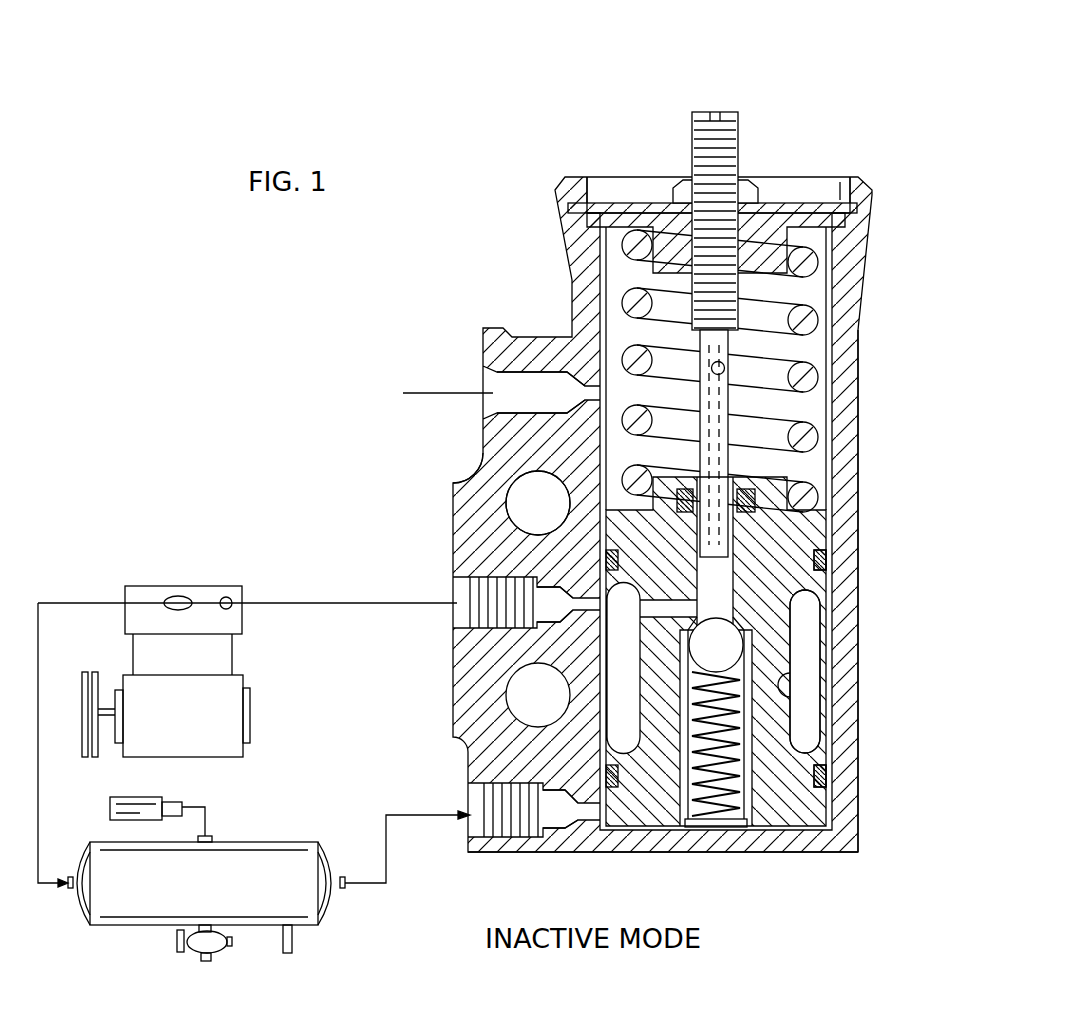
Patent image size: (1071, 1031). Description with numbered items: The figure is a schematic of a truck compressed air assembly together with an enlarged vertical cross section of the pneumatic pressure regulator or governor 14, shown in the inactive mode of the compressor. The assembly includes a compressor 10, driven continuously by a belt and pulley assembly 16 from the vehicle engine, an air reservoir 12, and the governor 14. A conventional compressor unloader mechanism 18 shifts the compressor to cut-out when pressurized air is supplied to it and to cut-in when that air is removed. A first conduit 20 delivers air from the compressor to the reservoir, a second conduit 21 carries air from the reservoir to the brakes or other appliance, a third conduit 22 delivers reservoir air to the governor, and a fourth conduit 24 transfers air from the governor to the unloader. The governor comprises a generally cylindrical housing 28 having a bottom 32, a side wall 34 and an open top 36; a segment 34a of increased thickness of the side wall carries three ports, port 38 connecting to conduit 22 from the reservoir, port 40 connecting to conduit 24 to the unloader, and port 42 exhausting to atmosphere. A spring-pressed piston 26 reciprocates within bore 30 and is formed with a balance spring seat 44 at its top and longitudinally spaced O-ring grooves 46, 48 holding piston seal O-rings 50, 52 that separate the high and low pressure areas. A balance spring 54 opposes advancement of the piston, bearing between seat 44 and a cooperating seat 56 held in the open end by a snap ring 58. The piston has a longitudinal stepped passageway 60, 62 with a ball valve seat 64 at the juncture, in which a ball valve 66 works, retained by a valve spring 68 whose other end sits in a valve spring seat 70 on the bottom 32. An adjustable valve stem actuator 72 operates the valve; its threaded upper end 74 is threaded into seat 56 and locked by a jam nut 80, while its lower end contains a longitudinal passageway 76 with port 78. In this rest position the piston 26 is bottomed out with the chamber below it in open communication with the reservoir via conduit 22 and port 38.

The compressor 10 is at (232, 683).
The air reservoir 12 is at (100, 928).
The pneumatic pressure regulator or governor 14 is at (584, 465).
The belt and pulley assembly 16 is at (84, 760).
The compressor unloader mechanism 18 is at (226, 598).
The first conduit 20 is at (75, 602).
The second conduit 21 is at (293, 940).
The third conduit 22 is at (382, 888).
The fourth conduit 24 is at (327, 605).
The spring-pressed piston 26 is at (792, 592).
The housing 28 is at (573, 297).
The bore 30 is at (822, 692).
The bottom 32 is at (717, 843).
The side wall 34 is at (845, 662).
The segment of increased thickness 34a is at (476, 508).
The open top 36 is at (800, 188).
The port 38 is at (468, 826).
The port 40 is at (458, 622).
The port 42 is at (493, 408).
The balance spring seat 44 is at (612, 503).
The O-ring groove 46 is at (822, 551).
The O-ring groove 48 is at (820, 776).
The O-ring 50 is at (820, 560).
The O-ring 52 is at (845, 748).
The balance spring 54 is at (818, 320).
The cooperating seat 56 is at (775, 237).
The snap ring 58 is at (848, 198).
The stepped passageway 60 is at (727, 580).
The stepped passageway 62 is at (753, 700).
The ball valve seat 64 is at (742, 640).
The ball valve 66 is at (760, 618).
The valve spring 68 is at (758, 790).
The valve spring seat 70 is at (735, 833).
The adjustable valve stem actuator 72 is at (738, 175).
The upper end 74 is at (742, 152).
The longitudinal passageway 76 is at (728, 410).
The port 78 is at (724, 367).
The jam nut 80 is at (690, 192).